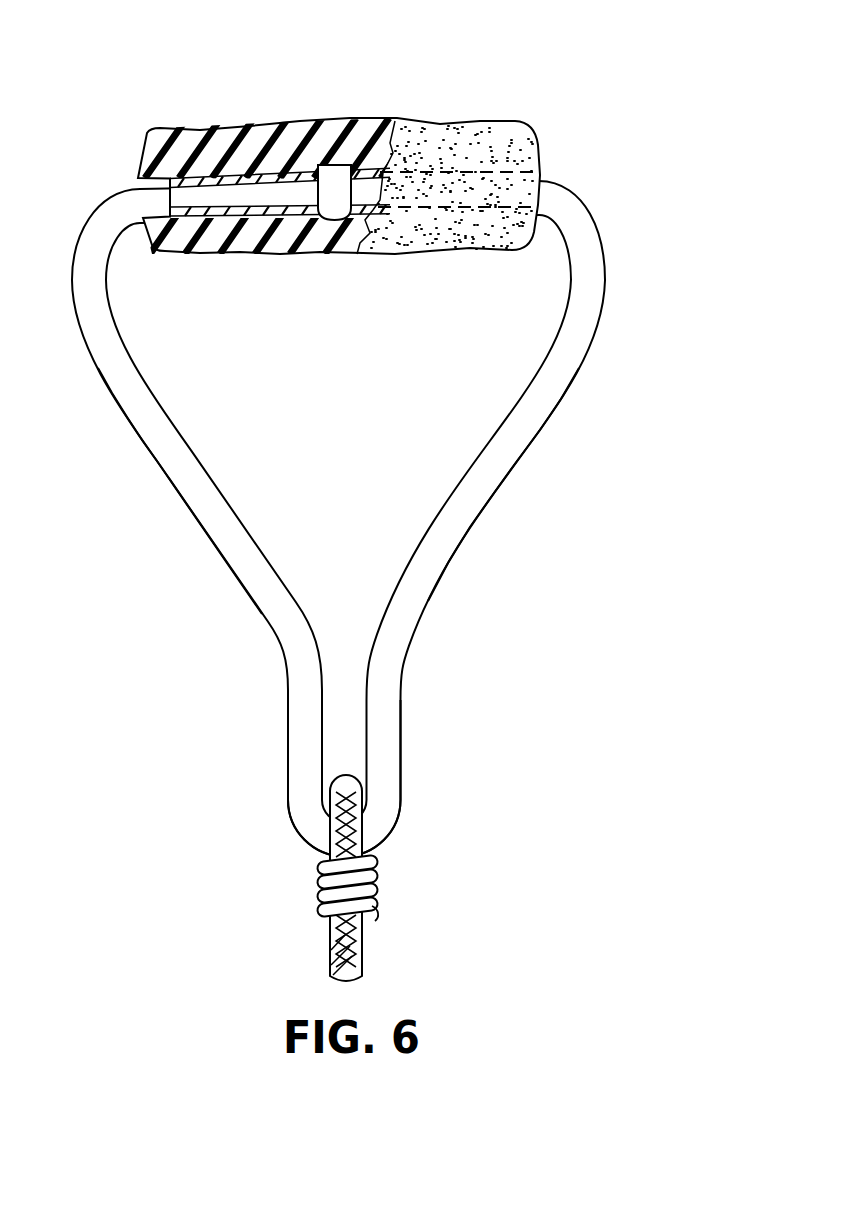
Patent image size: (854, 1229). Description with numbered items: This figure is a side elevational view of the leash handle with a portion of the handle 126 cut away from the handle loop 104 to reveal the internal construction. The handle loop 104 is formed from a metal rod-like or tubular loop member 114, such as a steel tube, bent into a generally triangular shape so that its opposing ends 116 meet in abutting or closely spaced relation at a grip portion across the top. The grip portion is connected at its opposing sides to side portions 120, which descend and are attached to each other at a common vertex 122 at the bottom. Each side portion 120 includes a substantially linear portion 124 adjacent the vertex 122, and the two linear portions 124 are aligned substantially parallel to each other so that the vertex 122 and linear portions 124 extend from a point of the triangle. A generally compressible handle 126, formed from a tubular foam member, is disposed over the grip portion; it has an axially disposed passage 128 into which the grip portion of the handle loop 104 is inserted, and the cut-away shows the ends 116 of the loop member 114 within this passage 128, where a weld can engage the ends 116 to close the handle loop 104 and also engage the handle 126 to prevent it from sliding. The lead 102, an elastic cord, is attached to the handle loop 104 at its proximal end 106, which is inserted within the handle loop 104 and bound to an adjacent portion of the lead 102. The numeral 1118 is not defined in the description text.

The lead 102 is at (398, 878).
The handle loop 104 is at (373, 459).
The proximal end 106 is at (367, 822).
The loop member 114 is at (365, 552).
The opposing ends 116 is at (367, 122).
The tube wall layer 1118 is at (204, 176).
The side portions 120 is at (112, 400).
The vertex 122 is at (310, 840).
The linear portions 124 is at (288, 697).
The handle 126 is at (309, 133).
The passage 128 is at (247, 175).